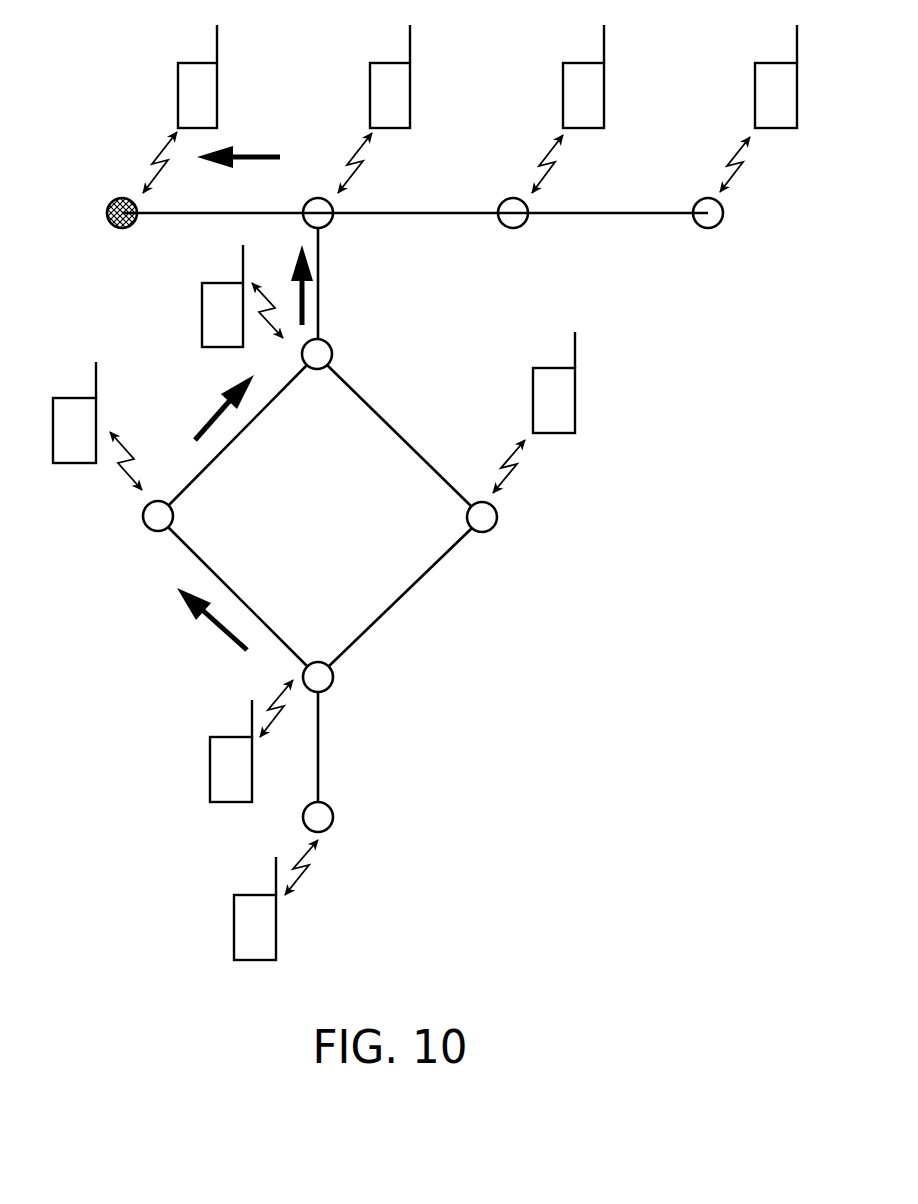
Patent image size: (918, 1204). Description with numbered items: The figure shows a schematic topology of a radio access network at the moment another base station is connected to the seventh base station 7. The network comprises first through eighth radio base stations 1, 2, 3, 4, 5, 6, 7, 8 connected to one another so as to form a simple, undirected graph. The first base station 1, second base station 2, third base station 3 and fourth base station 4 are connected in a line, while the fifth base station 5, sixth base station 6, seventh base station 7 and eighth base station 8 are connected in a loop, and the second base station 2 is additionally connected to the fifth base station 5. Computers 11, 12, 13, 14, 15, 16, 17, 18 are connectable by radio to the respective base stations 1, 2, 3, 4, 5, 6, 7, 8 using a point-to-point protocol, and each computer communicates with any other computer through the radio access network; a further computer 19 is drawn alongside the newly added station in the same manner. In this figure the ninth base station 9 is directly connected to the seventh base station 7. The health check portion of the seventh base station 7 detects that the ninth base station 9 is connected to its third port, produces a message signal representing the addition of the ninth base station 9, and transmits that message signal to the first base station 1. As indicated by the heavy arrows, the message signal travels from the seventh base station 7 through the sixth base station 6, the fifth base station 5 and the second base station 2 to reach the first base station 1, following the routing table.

The first radio base station 1 is at (112, 200).
The second radio base station 2 is at (310, 198).
The third radio base station 3 is at (505, 198).
The fourth radio base station 4 is at (700, 198).
The fifth radio base station 5 is at (333, 343).
The sixth radio base station 6 is at (148, 533).
The seventh radio base station 7 is at (333, 689).
The eighth radio base station 8 is at (495, 532).
The ninth radio base station 9 is at (333, 827).
The computer 11 is at (190, 63).
The computer 12 is at (380, 63).
The computer 13 is at (575, 63).
The computer 14 is at (783, 63).
The computer 15 is at (212, 283).
The computer 16 is at (65, 398).
The computer 17 is at (230, 737).
The computer 18 is at (543, 368).
The wireless terminal 19 is at (252, 895).